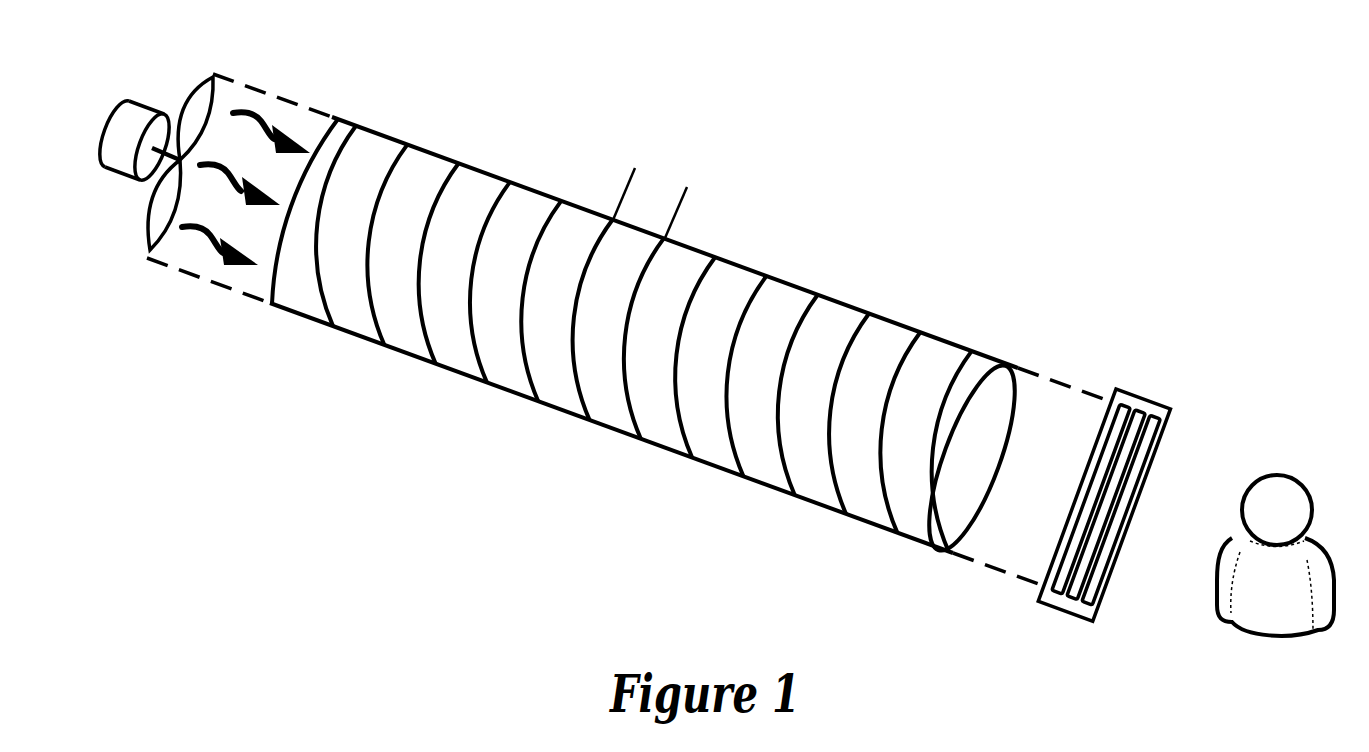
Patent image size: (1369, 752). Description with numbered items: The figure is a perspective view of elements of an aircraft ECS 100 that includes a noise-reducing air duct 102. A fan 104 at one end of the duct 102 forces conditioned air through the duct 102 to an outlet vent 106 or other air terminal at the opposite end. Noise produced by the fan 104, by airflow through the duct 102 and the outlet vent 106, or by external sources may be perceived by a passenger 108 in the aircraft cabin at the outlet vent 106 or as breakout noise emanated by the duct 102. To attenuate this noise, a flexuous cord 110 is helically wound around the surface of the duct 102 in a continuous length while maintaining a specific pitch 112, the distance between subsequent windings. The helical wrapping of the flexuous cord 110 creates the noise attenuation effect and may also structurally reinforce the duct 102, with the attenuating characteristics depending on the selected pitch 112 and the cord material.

The aircraft ECS 100 is at (812, 146).
The noise-reducing air duct 102 is at (882, 347).
The fan 104 is at (127, 147).
The outlet vent 106 is at (1147, 407).
The passenger 108 is at (1275, 518).
The flexuous cord 110 is at (420, 330).
The pitch 112 is at (722, 218).